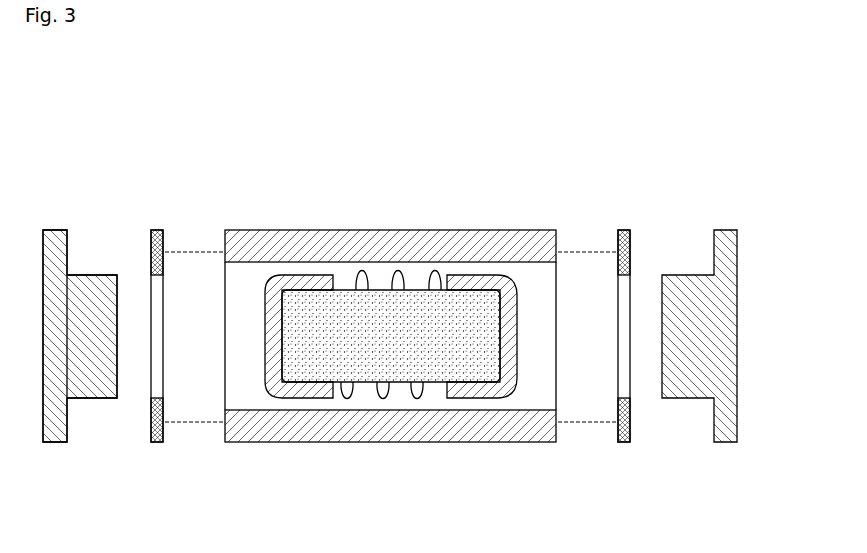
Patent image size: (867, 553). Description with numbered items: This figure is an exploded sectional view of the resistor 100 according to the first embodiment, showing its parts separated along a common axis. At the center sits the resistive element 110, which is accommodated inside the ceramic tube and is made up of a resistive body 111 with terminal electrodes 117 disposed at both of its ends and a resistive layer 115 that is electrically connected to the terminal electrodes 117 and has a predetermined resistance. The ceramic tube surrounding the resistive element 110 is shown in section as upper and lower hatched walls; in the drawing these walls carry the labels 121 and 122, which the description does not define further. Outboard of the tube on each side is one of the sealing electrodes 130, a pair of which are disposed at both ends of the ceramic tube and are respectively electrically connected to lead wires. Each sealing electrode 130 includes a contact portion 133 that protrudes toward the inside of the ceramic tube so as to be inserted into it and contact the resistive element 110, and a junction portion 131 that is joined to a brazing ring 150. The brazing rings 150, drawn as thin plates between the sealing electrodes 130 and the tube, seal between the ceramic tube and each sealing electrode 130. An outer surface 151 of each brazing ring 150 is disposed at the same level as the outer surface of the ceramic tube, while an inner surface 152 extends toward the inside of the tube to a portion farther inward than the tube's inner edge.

The resistor 100 is at (38, 77).
The resistive element 110 is at (333, 504).
The resistive body 111 is at (360, 365).
The resistive layer 115 is at (407, 384).
The terminal electrodes 117 is at (470, 396).
The core 121 is at (313, 230).
The coil turns 122 is at (388, 268).
The sealing electrodes 130 is at (133, 161).
The junction portion 131 is at (68, 250).
The contact portion 133 is at (120, 292).
The brazing rings 150 is at (175, 145).
The outer surface of the brazing ring 151 is at (158, 229).
The inner surface of the brazing ring 152 is at (163, 290).